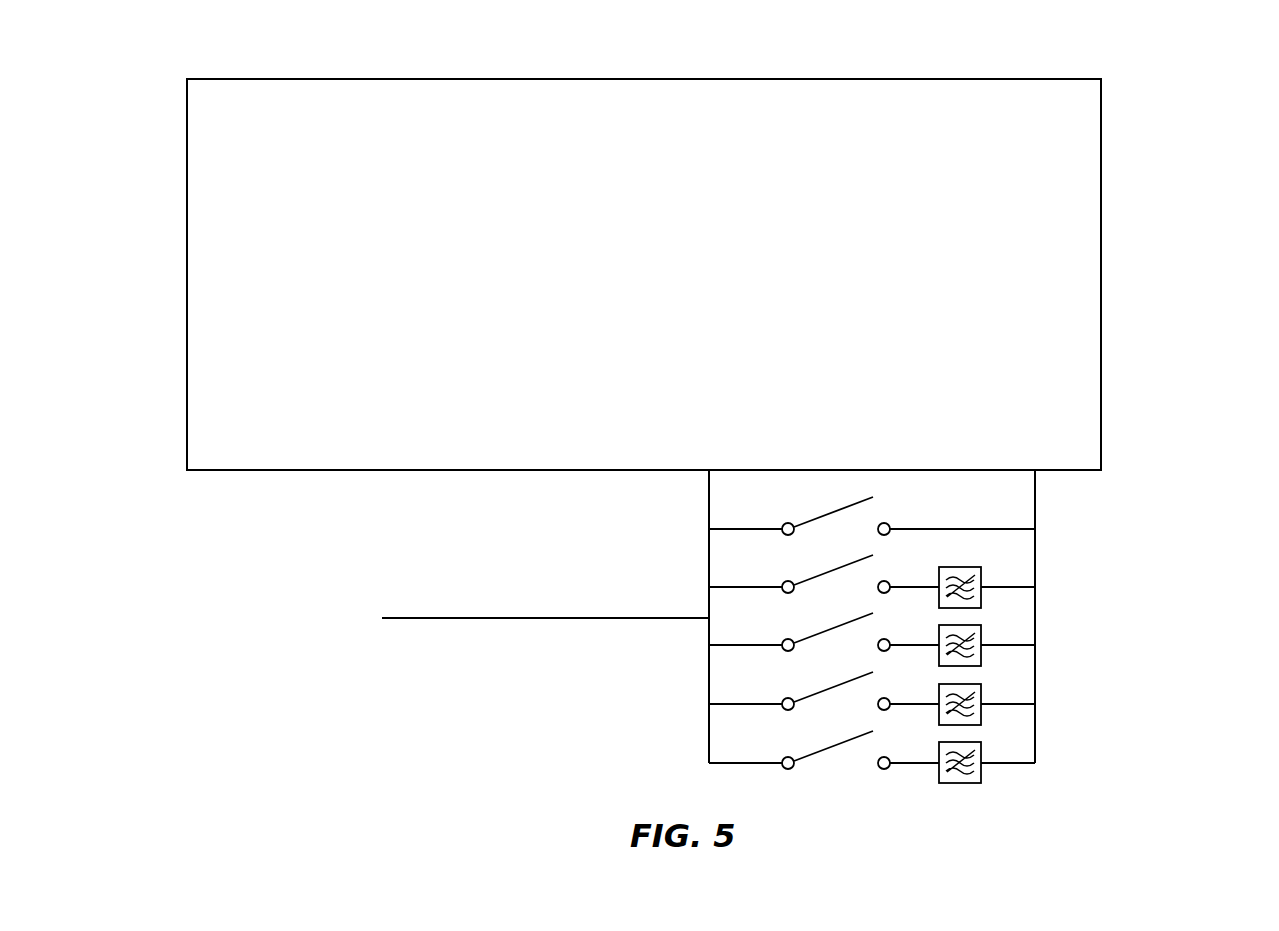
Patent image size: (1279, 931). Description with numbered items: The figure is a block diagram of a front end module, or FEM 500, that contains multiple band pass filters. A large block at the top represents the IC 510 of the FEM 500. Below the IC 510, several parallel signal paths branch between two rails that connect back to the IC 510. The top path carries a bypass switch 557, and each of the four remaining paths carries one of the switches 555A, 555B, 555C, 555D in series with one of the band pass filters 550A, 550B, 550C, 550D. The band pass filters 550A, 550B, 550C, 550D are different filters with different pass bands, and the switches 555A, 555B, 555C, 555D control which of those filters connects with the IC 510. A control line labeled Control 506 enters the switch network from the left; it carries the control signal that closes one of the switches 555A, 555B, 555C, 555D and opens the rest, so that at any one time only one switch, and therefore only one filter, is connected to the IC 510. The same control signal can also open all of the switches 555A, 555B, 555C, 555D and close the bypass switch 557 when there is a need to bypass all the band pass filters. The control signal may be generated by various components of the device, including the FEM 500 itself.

The front end module (FEM) 500 is at (1129, 124).
The IC 510 is at (644, 274).
The control signal 506 is at (545, 608).
The bypass switch 557 is at (910, 528).
The switch 555A is at (801, 583).
The switch 555B is at (801, 641).
The switch 555C is at (801, 700).
The switch 555D is at (801, 759).
The band pass filter 550A is at (981, 597).
The band pass filter 550B is at (981, 655).
The band pass filter 550C is at (981, 714).
The band pass filter 550D is at (981, 773).